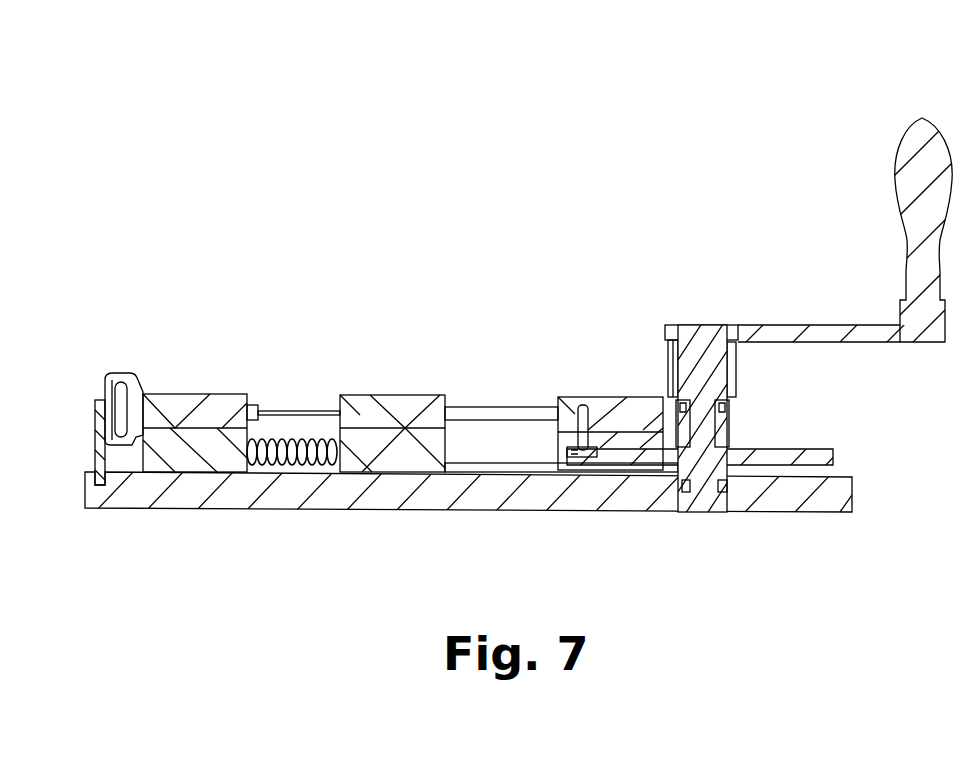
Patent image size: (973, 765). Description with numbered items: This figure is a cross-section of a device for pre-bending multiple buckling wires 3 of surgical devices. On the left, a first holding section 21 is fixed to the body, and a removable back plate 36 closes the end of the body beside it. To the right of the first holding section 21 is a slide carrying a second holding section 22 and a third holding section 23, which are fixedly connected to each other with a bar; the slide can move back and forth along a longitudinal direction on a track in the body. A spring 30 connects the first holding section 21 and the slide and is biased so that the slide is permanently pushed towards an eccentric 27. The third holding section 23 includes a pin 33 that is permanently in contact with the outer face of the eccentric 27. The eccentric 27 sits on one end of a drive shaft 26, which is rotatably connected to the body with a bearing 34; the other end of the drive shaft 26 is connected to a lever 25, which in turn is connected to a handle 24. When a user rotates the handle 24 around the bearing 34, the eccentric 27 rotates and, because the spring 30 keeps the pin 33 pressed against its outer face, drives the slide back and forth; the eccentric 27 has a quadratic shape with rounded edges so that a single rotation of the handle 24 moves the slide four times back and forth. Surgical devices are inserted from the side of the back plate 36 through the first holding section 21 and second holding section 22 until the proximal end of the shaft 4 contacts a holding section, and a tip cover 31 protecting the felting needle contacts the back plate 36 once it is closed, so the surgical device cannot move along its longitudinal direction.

The buckling wire 3 is at (295, 407).
The shaft 4 is at (495, 407).
The first holding section 21 is at (193, 393).
The second holding section 22 is at (405, 395).
The third holding section 23 is at (607, 397).
The handle 24 is at (945, 130).
The lever 25 is at (818, 325).
The drive shaft 26 is at (695, 340).
The eccentric 27 is at (835, 452).
The spring 30 is at (282, 468).
The tip cover 31 is at (130, 372).
The pin 33 is at (572, 462).
The bearing 34 is at (735, 408).
The removable back plate 36 is at (88, 480).